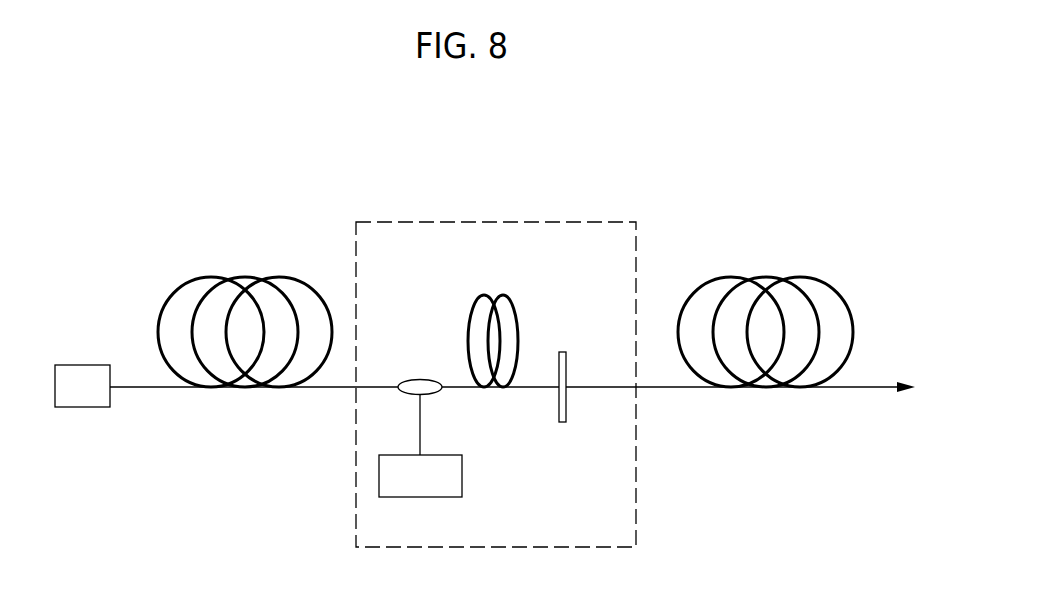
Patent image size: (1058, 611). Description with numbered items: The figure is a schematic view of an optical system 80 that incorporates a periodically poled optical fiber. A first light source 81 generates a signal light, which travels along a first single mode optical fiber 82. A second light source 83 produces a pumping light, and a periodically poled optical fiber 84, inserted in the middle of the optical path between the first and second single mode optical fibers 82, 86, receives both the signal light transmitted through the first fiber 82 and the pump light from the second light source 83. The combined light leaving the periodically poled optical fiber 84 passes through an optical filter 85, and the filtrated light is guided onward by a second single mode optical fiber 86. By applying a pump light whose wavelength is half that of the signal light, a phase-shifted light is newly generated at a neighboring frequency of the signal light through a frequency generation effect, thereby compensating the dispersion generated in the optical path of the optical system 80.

The optical system 80 is at (750, 195).
The first light source 81 is at (87, 365).
The first single mode optical fiber 82 is at (283, 275).
The second light source 83 is at (423, 498).
The periodically poled optical fiber 84 is at (502, 295).
The optical filter 85 is at (563, 423).
The second single mode optical fiber 86 is at (803, 277).